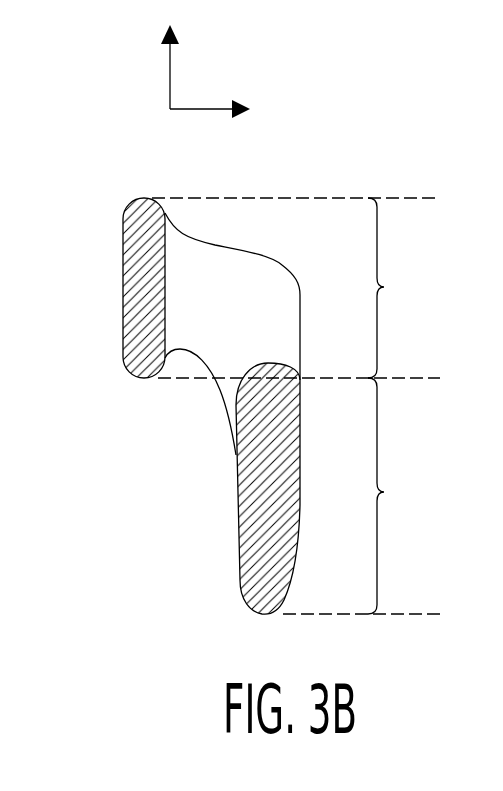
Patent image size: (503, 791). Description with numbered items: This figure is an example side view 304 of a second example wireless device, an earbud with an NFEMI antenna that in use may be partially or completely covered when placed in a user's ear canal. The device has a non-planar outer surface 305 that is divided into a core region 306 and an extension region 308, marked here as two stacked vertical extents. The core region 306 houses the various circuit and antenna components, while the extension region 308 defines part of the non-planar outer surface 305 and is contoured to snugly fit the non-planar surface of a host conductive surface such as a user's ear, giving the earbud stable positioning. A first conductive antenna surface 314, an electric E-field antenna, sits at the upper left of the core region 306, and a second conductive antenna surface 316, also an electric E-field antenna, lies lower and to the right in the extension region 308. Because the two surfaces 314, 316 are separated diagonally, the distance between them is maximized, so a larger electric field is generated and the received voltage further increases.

The side view 304 is at (170, 63).
The non-planar outer surface 305 is at (255, 254).
The core region 306 is at (296, 288).
The extension region 308 is at (361, 496).
The first conductive antenna surface 314 is at (135, 263).
The second conductive antenna surface 316 is at (253, 530).